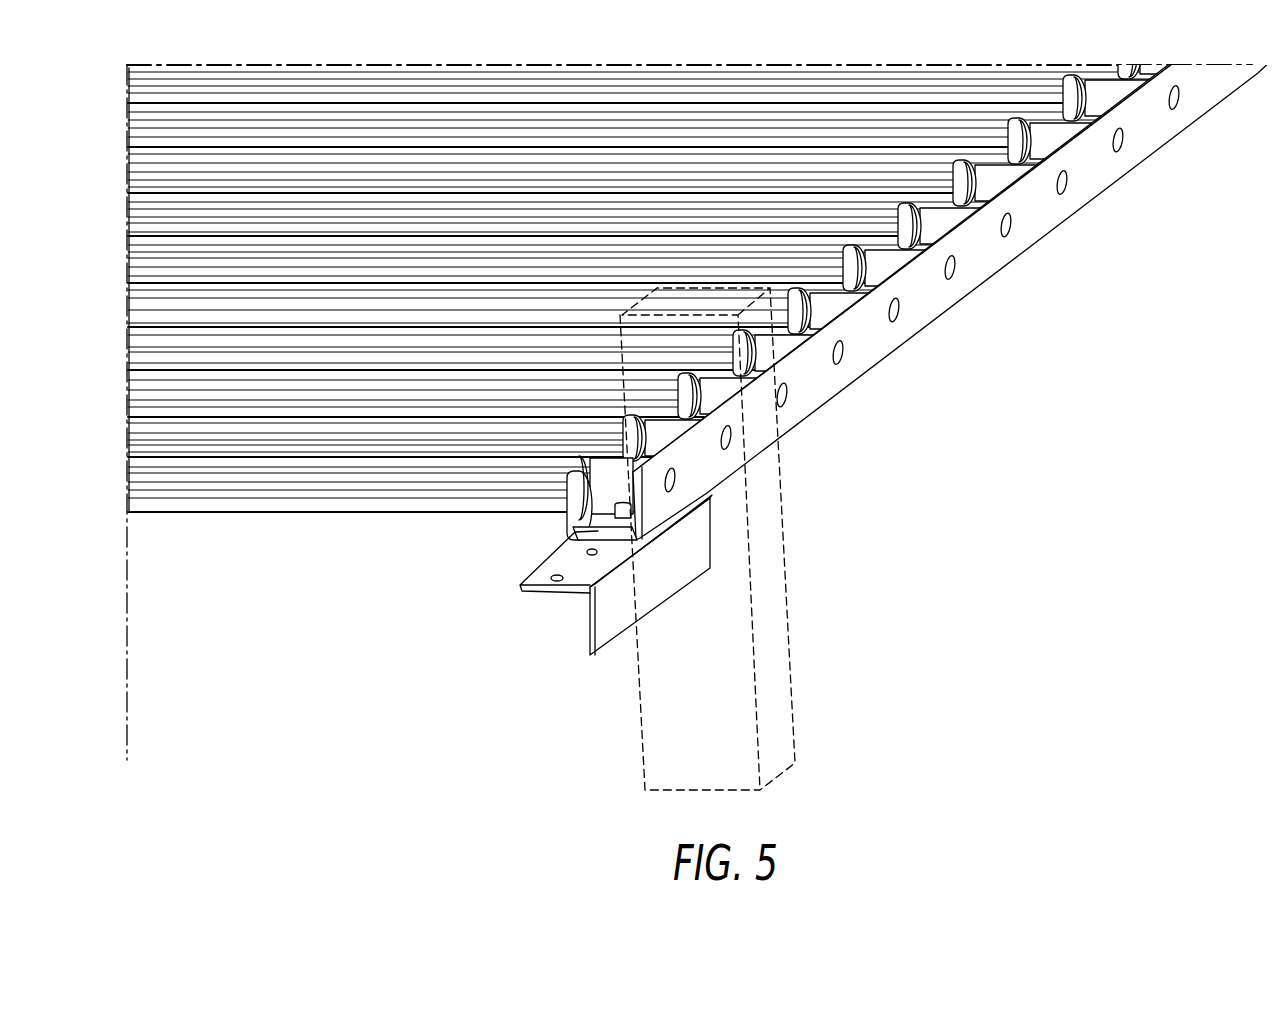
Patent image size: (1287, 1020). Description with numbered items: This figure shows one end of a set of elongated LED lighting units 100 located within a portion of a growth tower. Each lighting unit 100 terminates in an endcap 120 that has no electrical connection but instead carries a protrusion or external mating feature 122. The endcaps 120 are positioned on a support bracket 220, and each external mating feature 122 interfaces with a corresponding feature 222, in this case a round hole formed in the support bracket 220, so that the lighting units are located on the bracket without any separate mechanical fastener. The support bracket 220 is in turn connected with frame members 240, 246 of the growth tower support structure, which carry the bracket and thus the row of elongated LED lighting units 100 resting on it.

The elongated LED lighting unit 100 is at (248, 521).
The endcap 120 is at (563, 500).
The external mating feature 122 is at (1008, 230).
The support bracket 220 is at (818, 412).
The corresponding feature 222 is at (996, 251).
The frame member 240 is at (640, 707).
The frame member 246 is at (578, 622).